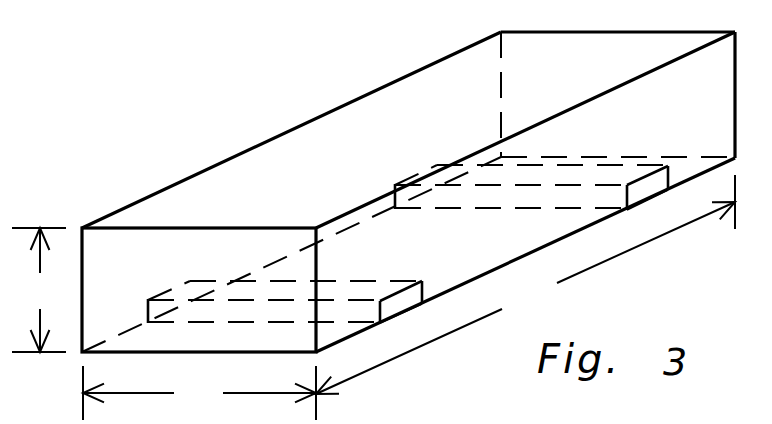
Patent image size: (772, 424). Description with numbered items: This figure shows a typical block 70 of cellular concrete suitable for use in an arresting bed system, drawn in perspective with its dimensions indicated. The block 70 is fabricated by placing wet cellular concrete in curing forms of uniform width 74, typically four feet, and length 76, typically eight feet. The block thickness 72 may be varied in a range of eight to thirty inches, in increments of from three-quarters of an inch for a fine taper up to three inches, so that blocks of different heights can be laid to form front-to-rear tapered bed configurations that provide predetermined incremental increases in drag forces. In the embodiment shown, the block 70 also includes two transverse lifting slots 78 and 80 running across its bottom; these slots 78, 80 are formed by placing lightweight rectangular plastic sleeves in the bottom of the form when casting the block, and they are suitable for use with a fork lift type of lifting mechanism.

The block 70 is at (268, 104).
The block thickness 72 is at (39, 290).
The width 74 is at (199, 393).
The length 76 is at (525, 284).
The transverse lifting slot 78 is at (213, 281).
The transverse lifting slot 80 is at (483, 208).